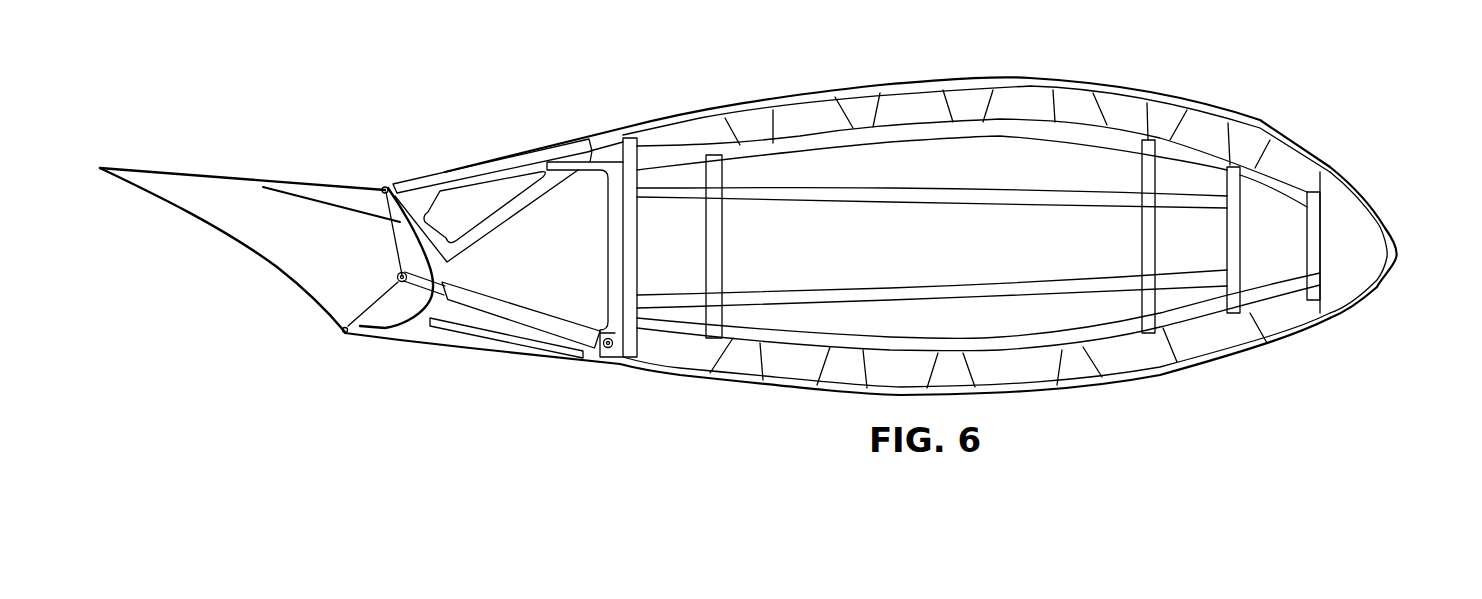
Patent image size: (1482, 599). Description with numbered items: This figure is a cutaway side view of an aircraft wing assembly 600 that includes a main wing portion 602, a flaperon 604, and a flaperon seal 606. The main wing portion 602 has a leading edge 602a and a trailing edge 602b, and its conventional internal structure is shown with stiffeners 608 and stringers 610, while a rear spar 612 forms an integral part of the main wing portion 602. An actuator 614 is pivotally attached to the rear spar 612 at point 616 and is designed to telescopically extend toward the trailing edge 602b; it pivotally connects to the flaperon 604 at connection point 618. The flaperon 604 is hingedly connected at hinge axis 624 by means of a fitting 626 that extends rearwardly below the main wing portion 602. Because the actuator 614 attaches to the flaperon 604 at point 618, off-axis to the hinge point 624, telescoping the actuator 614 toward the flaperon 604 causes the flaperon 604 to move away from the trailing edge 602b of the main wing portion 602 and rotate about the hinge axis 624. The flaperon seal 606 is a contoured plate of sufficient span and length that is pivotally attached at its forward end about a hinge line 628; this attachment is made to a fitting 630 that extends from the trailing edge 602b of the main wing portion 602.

The aircraft wing assembly 600 is at (1264, 79).
The main wing portion 602 is at (899, 77).
The leading edge 602a is at (1387, 231).
The trailing edge 602b is at (508, 157).
The flaperon 604 is at (203, 243).
The flaperon seal 606 is at (332, 191).
The stiffeners 608 is at (1242, 216).
The stringers 610 is at (1053, 104).
The rear spar 612 is at (638, 249).
The actuator 614 is at (528, 303).
The pivot point 616 is at (613, 357).
The connection point 618 is at (396, 276).
The hinge axis 624 is at (346, 336).
The fitting 626 is at (363, 333).
The hinge line 628 is at (391, 184).
The fitting 630 is at (380, 186).